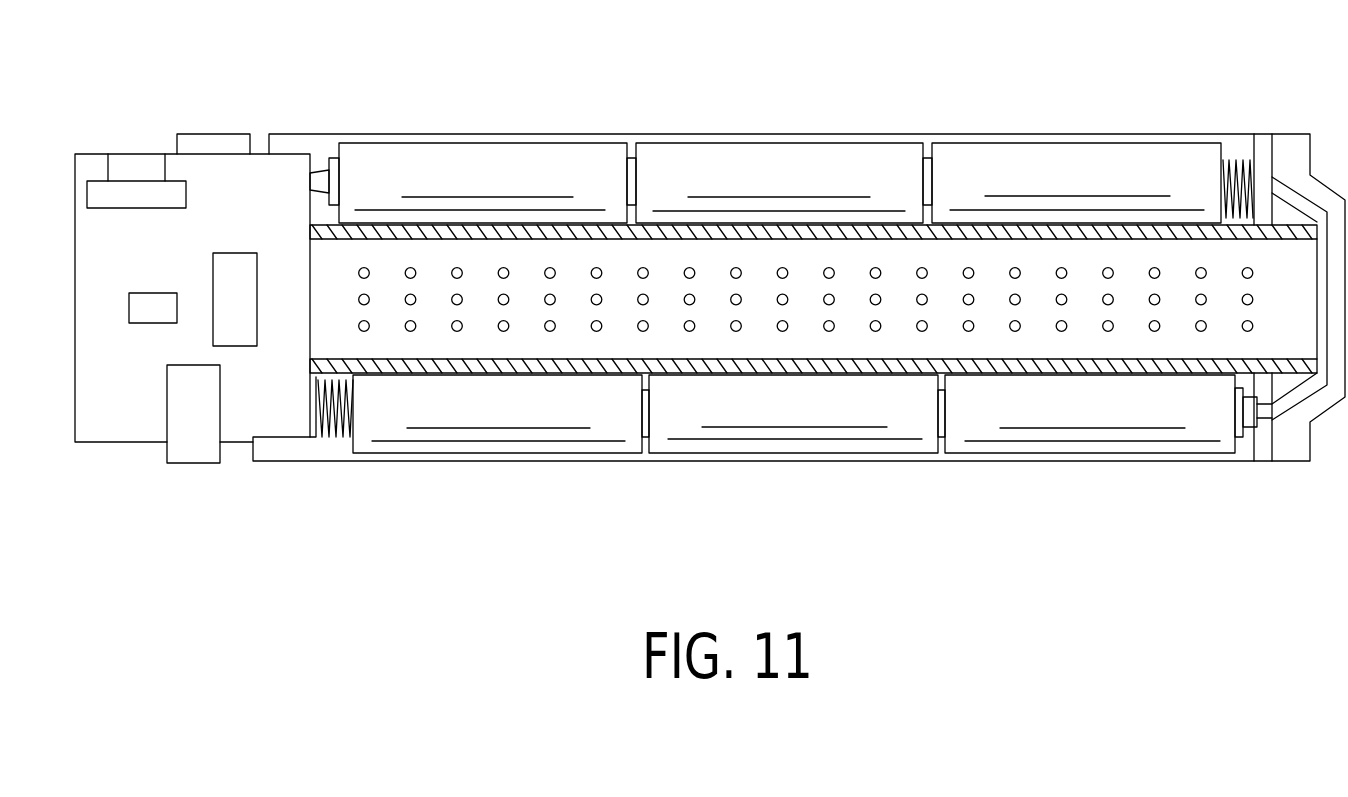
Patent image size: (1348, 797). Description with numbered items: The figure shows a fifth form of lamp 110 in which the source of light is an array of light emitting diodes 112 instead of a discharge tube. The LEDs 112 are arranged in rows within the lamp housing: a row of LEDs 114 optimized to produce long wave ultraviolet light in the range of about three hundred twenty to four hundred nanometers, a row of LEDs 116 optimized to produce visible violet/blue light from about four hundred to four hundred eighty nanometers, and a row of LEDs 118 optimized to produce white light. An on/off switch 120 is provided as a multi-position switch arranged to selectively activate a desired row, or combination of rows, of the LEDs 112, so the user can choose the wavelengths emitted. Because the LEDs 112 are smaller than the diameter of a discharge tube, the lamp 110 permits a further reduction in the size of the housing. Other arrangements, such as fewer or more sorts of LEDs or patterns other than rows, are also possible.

The lamp 110 is at (500, 489).
The light emitting diodes 112 is at (368, 269).
The row of LEDs optimized to produce ultraviolet light 114 is at (784, 267).
The row of LEDs optimized to produce visible violet/blue light 116 is at (830, 331).
The row of LEDs optimized to produce white light 118 is at (1065, 304).
The on/off switch 120 is at (218, 131).